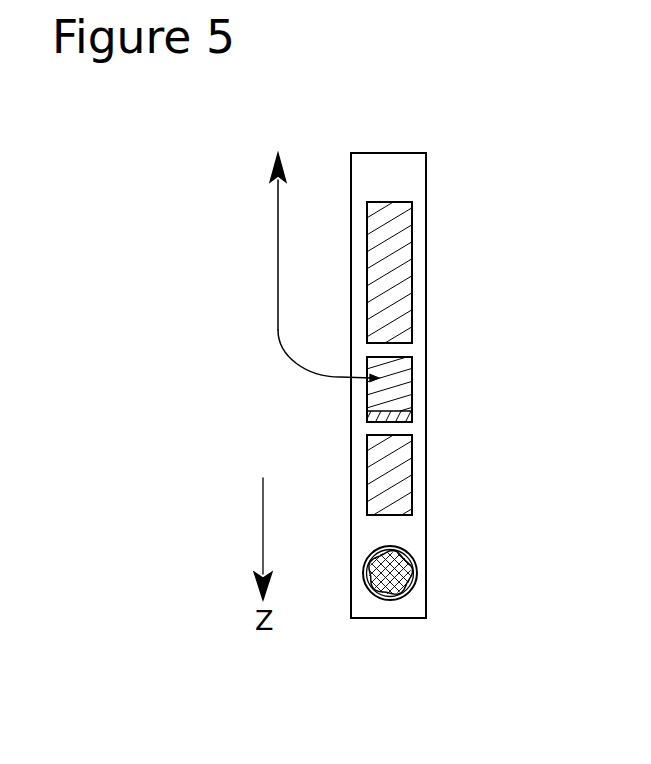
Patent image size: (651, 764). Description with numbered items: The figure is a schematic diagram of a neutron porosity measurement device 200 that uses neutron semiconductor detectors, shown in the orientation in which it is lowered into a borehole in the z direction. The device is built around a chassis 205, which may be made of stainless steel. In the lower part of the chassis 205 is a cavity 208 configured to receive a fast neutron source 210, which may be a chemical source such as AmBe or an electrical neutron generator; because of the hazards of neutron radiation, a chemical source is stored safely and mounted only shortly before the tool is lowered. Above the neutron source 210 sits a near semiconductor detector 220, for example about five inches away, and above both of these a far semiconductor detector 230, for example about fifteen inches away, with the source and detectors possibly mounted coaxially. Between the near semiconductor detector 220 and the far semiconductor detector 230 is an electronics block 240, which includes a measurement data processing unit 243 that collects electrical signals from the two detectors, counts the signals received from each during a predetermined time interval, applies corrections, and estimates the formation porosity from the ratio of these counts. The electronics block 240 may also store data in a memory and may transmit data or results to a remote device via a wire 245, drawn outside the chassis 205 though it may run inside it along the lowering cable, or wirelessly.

The neutron porosity measurement device 200 is at (248, 137).
The chassis 205 is at (395, 179).
The cavity 208 is at (383, 550).
The fast neutron source 210 is at (393, 582).
The near semiconductor detector 220 is at (400, 488).
The far semiconductor detector 230 is at (393, 302).
The electronics block 240 is at (397, 392).
The measurement data processing unit 243 is at (403, 417).
The wire 245 is at (293, 361).